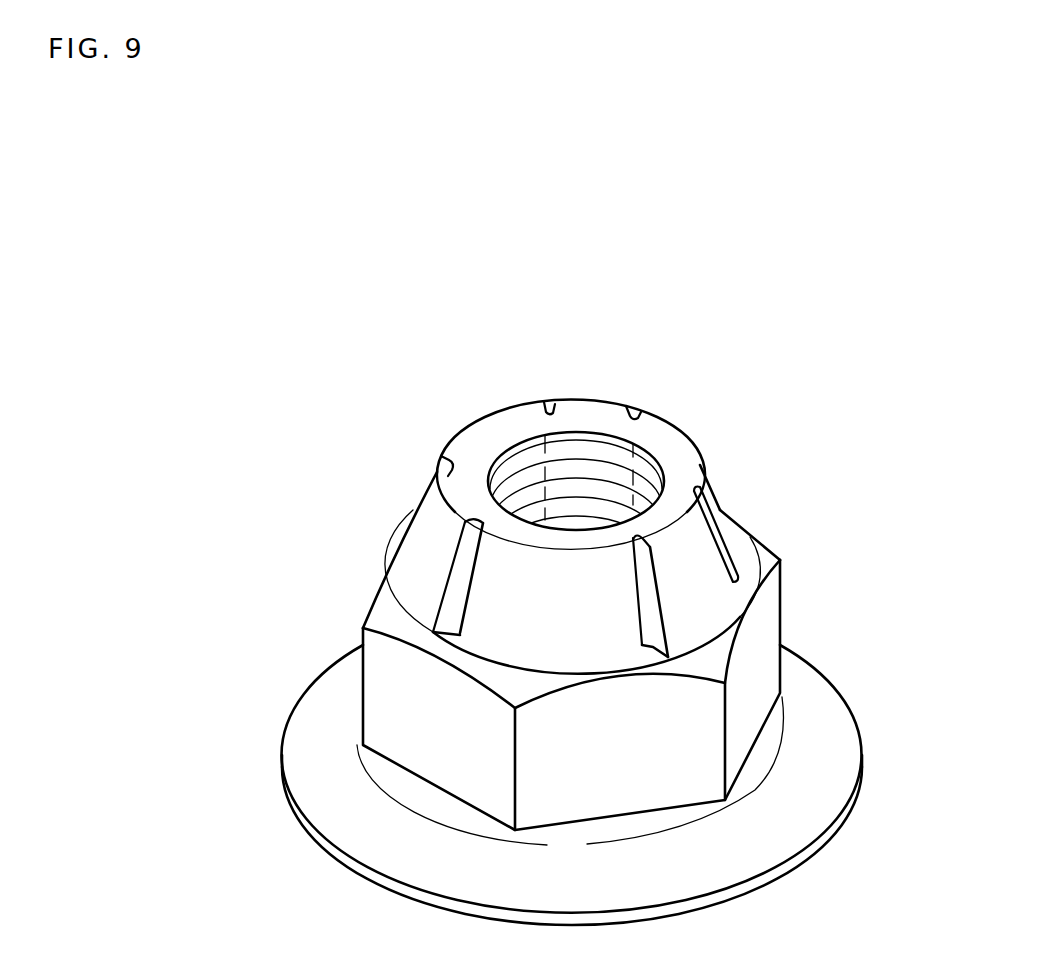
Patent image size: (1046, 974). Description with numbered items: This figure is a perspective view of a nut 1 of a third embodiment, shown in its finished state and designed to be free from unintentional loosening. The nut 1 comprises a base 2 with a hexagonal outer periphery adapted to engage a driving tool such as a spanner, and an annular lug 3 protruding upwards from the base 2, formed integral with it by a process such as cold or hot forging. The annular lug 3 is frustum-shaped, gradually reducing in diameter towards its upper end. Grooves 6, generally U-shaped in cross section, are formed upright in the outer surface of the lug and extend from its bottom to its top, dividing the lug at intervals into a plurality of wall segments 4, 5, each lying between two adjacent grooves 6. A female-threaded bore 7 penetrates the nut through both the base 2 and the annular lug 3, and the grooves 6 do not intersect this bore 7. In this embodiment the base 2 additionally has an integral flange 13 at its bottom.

The nut 1 is at (797, 545).
The base 2 is at (358, 712).
The annular lug 3 is at (410, 513).
The wall segment 4 is at (432, 493).
The wall segment 5 is at (506, 416).
The grooves 6 is at (451, 460).
The internally threaded bore 7 is at (537, 437).
The flange 13 is at (790, 850).